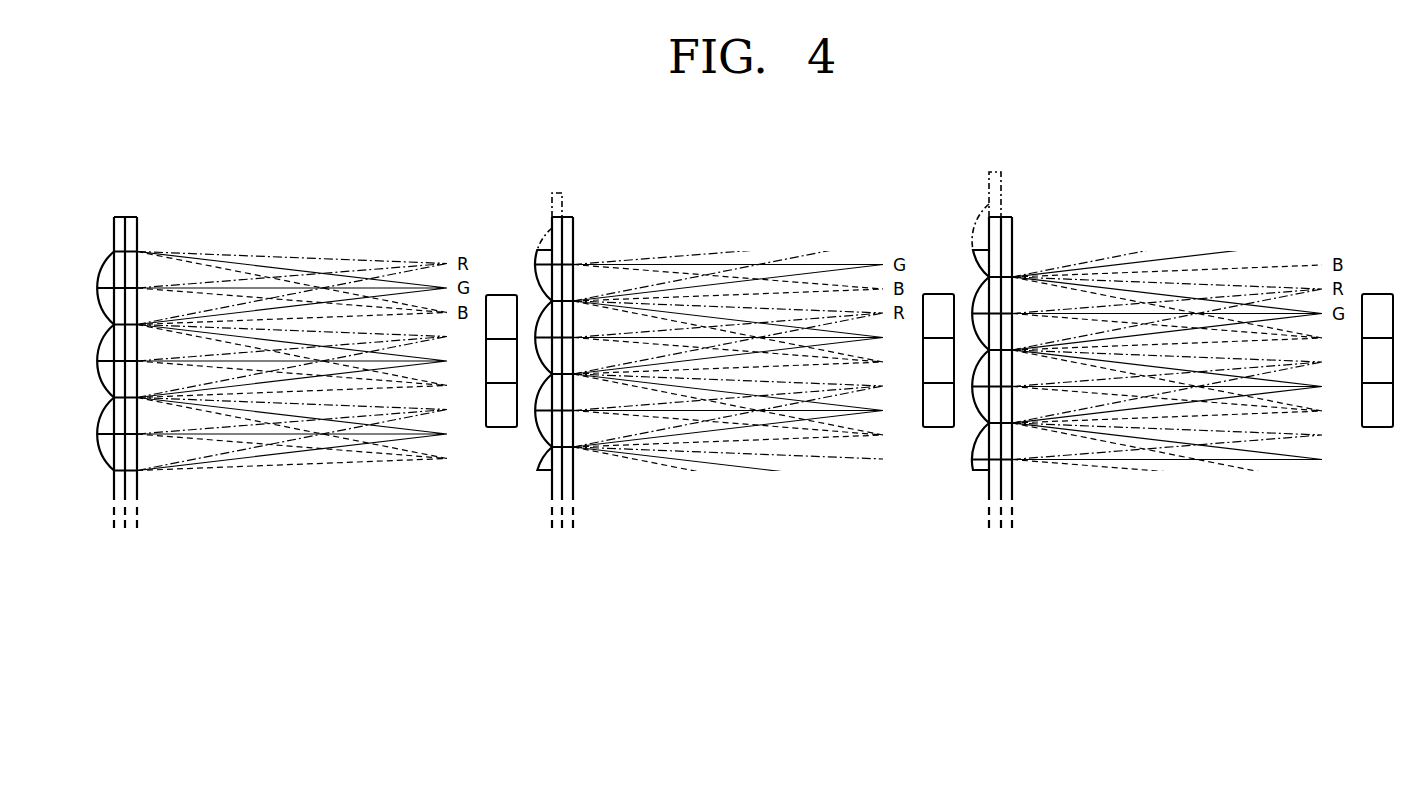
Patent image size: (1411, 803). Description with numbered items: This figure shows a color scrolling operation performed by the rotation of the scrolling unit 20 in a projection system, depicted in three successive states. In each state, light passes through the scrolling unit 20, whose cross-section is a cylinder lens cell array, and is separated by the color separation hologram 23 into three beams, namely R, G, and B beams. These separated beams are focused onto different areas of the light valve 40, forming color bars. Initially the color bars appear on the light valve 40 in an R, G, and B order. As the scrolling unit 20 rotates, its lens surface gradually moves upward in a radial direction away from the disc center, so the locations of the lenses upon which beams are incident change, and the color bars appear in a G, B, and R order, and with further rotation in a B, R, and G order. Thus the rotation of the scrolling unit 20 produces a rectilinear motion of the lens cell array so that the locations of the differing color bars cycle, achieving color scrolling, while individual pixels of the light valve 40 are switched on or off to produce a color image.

The scrolling unit 20 is at (125, 222).
The color separation hologram 23 is at (138, 234).
The light valve 40 is at (500, 295).